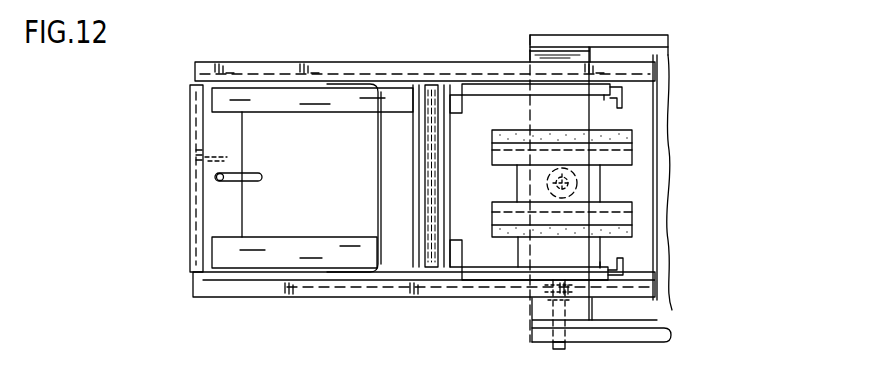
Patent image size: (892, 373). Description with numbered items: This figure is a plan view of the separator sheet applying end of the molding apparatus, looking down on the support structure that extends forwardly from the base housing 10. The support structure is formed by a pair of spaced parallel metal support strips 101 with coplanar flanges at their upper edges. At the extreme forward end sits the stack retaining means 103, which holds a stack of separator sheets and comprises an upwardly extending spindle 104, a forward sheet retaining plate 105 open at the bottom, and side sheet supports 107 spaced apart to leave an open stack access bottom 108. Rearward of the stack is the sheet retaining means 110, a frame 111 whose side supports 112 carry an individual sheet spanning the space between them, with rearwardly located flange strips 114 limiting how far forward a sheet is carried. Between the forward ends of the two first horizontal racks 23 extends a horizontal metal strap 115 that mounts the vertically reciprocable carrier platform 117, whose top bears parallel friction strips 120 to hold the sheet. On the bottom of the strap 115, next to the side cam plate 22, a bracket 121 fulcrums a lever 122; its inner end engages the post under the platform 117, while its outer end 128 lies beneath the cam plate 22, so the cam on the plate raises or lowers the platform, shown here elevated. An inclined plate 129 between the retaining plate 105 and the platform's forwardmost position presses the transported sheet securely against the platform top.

The base housing 10 is at (668, 178).
The side cam plate 22 is at (652, 342).
The first horizontal racks 23 is at (612, 17).
The support strips 101 is at (385, 74).
The stack retaining means 103 is at (317, 115).
The spindle 104 is at (228, 177).
The forward sheet retaining plate 105 is at (377, 205).
The side sheet supports 107 is at (267, 93).
The open stack access bottom 108 is at (327, 175).
The sheet retaining means 110 is at (503, 98).
The frame 111 is at (483, 265).
The side supports 112 is at (598, 95).
The flange strips 114 is at (620, 99).
The horizontal metal strap 115 is at (533, 117).
The carrier platform 117 is at (517, 164).
The friction strips 120 is at (578, 112).
The bracket 121 is at (616, 312).
The lever 122 is at (550, 247).
The outer end of lever 128 is at (557, 349).
The inclined plate 129 is at (420, 197).